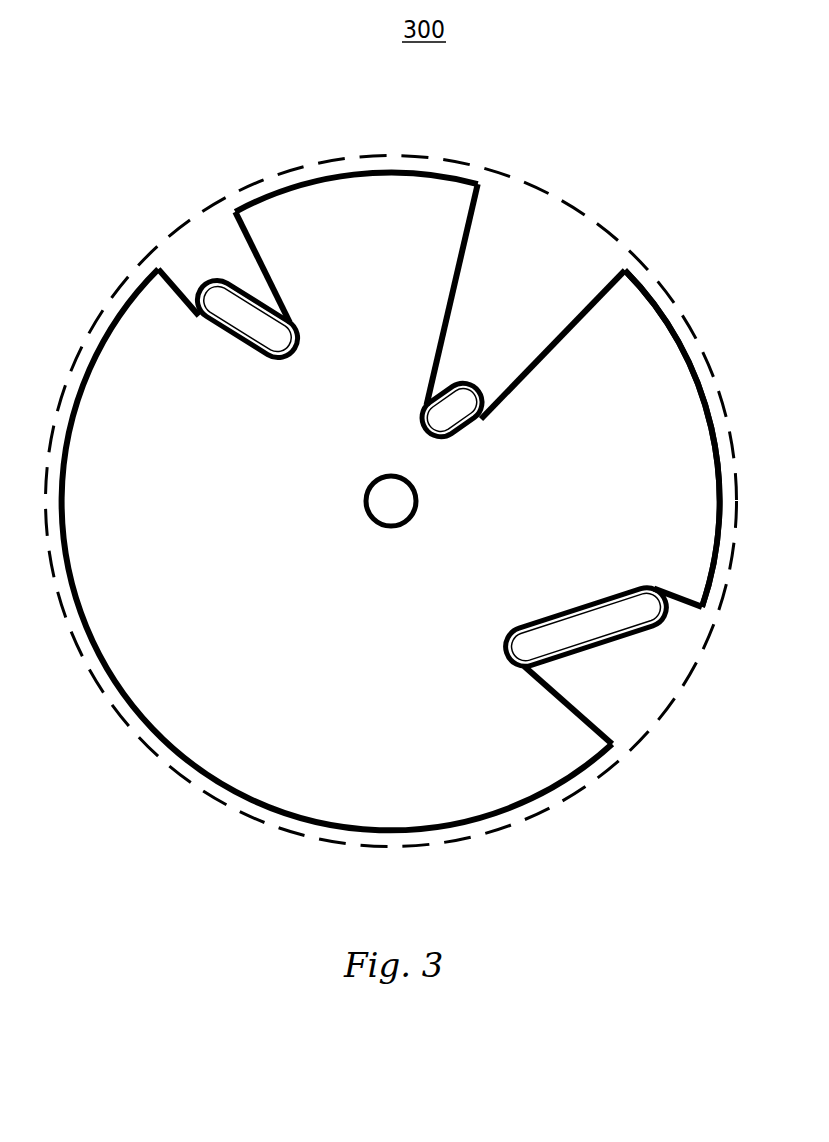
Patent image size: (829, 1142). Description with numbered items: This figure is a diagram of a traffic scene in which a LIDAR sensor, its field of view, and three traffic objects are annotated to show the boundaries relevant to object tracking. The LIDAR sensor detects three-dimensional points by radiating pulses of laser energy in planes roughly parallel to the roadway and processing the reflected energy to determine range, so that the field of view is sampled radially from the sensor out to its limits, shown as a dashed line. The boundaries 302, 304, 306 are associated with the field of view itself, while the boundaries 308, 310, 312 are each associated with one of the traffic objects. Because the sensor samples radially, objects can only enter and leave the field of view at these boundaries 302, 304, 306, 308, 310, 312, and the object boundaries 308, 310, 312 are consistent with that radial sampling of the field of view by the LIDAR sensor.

The boundary 302 is at (180, 748).
The boundary 304 is at (303, 188).
The boundary 306 is at (707, 440).
The boundary 308 is at (263, 258).
The boundary 310 is at (553, 352).
The boundary 312 is at (542, 690).